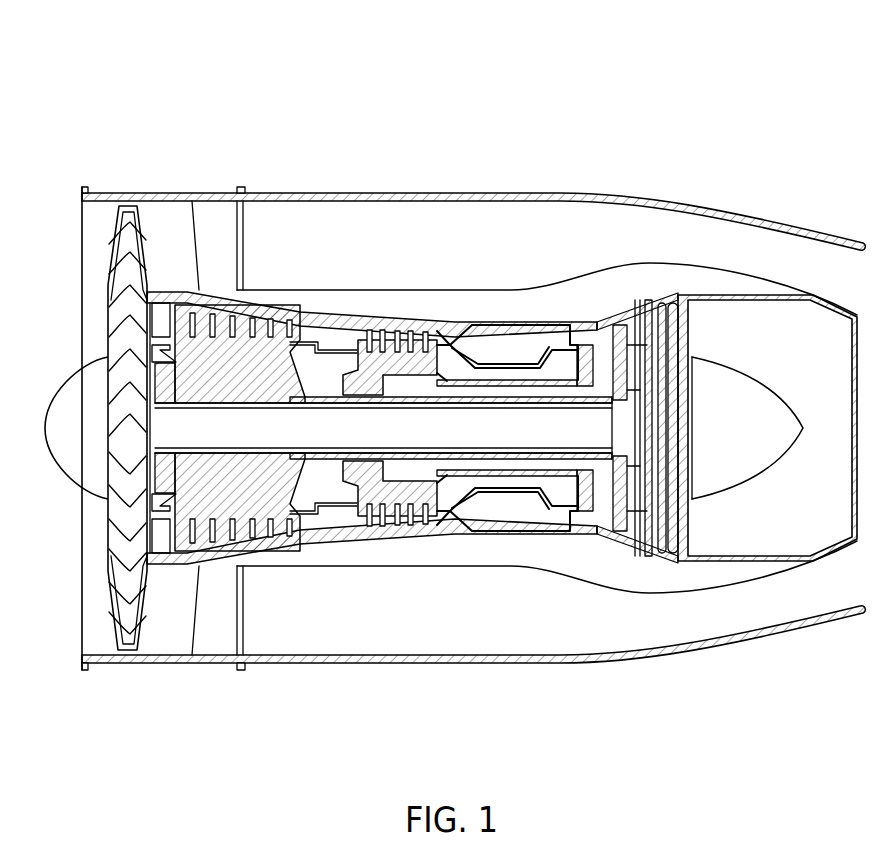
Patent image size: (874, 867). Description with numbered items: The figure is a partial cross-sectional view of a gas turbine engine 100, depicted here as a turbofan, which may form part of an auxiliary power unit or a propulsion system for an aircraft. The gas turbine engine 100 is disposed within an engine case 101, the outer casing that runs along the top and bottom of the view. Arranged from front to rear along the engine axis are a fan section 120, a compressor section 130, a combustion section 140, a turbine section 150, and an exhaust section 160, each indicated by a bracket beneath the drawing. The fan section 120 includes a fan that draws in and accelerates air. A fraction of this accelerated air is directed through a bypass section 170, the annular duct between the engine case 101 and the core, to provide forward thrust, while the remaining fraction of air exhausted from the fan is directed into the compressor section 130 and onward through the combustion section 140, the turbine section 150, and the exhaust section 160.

The gas turbine engine 100 is at (293, 96).
The engine case 101 is at (300, 193).
The bypass section 170 is at (408, 200).
The fan section 120 is at (158, 695).
The compressor section 130 is at (392, 695).
The combustion section 140 is at (545, 695).
The turbine section 150 is at (693, 695).
The exhaust section 160 is at (810, 695).